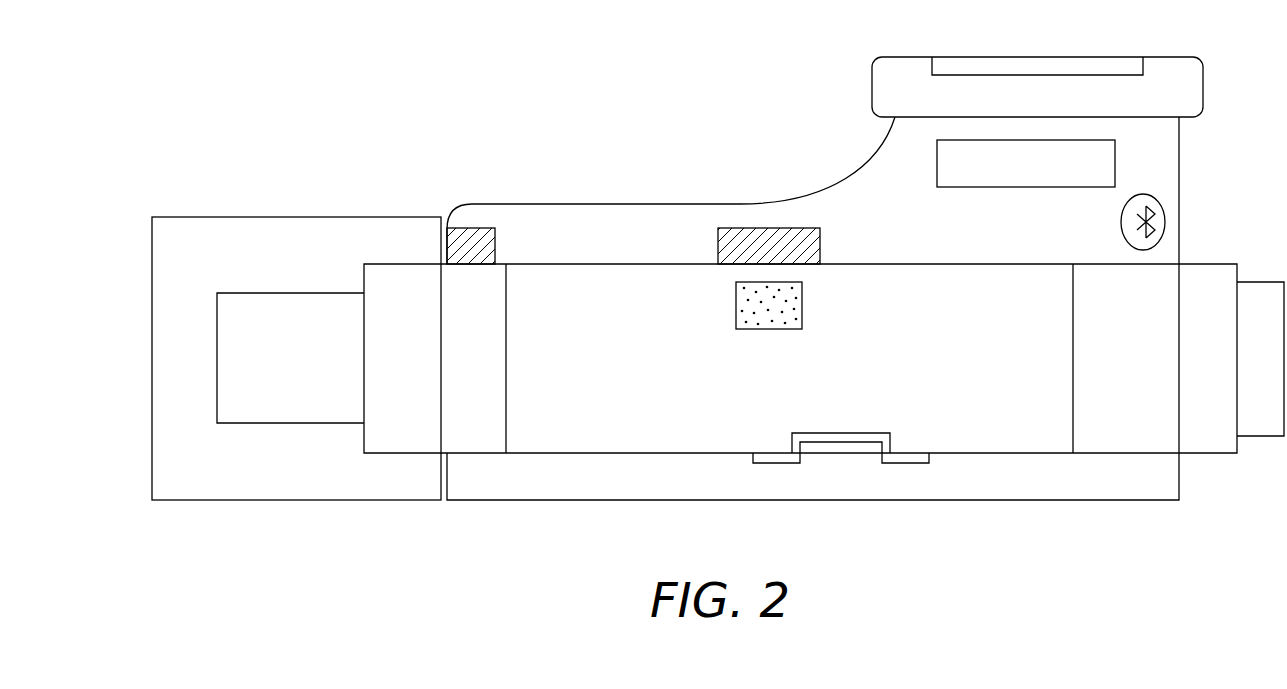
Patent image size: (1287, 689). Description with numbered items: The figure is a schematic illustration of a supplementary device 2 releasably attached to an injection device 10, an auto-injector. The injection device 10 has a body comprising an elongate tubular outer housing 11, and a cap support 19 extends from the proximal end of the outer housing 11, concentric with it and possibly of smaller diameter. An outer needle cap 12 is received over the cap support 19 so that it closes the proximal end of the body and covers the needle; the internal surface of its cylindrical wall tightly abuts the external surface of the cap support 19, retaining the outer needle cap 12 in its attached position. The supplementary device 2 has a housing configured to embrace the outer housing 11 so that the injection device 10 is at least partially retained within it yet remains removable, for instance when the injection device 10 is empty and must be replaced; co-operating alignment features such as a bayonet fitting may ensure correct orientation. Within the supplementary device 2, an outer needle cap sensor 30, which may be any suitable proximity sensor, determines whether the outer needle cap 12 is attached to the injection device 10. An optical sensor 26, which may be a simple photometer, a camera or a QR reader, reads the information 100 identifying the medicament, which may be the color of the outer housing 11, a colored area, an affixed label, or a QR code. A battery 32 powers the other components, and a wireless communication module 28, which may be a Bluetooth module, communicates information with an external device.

The supplementary device 2 is at (1040, 57).
The injection device 10 is at (1213, 443).
The outer housing 11 is at (631, 435).
The outer needle cap 12 is at (176, 228).
The cap support 19 is at (270, 405).
The optical sensor 26 is at (745, 228).
The wireless communication module 28 is at (1166, 222).
The outer needle cap sensor 30 is at (471, 228).
The battery 32 is at (1115, 152).
The information identifying the medicament 100 is at (802, 303).